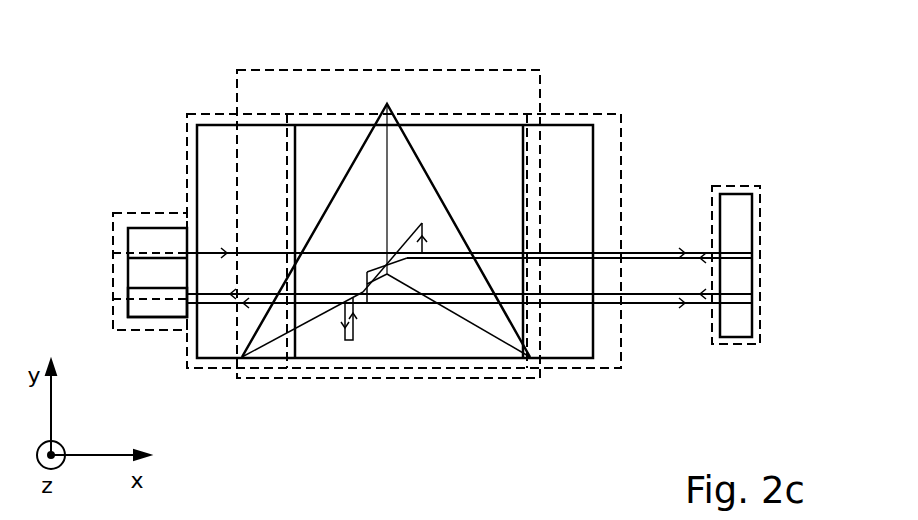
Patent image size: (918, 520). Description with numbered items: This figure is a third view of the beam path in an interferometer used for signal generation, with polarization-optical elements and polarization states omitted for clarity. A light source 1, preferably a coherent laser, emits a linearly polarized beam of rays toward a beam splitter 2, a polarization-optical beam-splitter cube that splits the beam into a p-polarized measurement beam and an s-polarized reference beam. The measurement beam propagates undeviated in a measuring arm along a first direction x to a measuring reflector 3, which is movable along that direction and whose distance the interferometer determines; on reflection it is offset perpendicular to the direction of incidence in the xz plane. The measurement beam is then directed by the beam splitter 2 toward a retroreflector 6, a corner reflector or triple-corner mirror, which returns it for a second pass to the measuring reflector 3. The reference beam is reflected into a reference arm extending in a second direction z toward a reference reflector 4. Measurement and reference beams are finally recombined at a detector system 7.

The light source 1 is at (130, 242).
The detector system 7 is at (130, 312).
The beam splitter 2 is at (495, 368).
The measuring reflector 3 is at (746, 224).
The reference reflector 4 is at (621, 145).
The retroreflector 6 is at (366, 176).